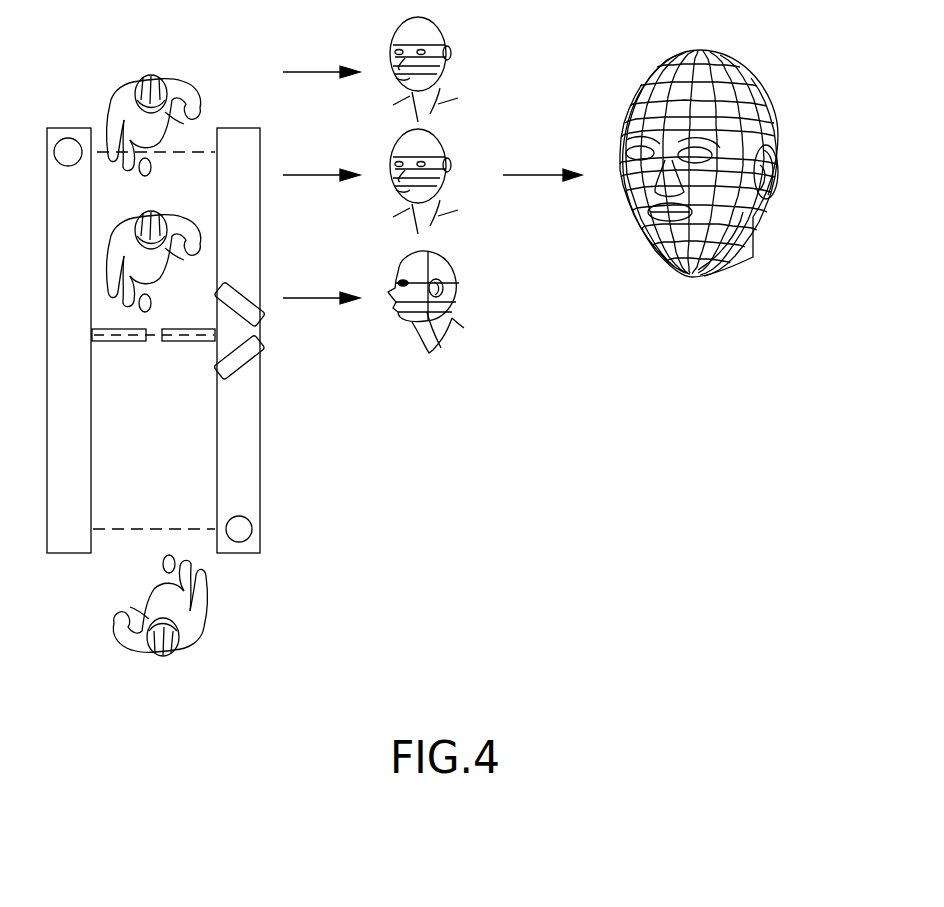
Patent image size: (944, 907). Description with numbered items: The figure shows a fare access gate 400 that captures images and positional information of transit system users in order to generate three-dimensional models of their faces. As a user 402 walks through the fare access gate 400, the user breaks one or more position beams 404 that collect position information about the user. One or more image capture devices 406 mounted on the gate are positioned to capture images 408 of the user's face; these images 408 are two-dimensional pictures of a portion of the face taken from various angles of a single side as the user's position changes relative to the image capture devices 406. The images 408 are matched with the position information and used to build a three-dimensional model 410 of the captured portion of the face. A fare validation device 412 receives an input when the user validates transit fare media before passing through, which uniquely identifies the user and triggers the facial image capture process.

The fare access gate 400 is at (197, 312).
The user 402 is at (192, 86).
The position beams 404 is at (140, 531).
The image capture devices 406 is at (243, 366).
The images 408 is at (442, 87).
The 3D model 410 is at (655, 248).
The fare validation device 412 is at (68, 137).